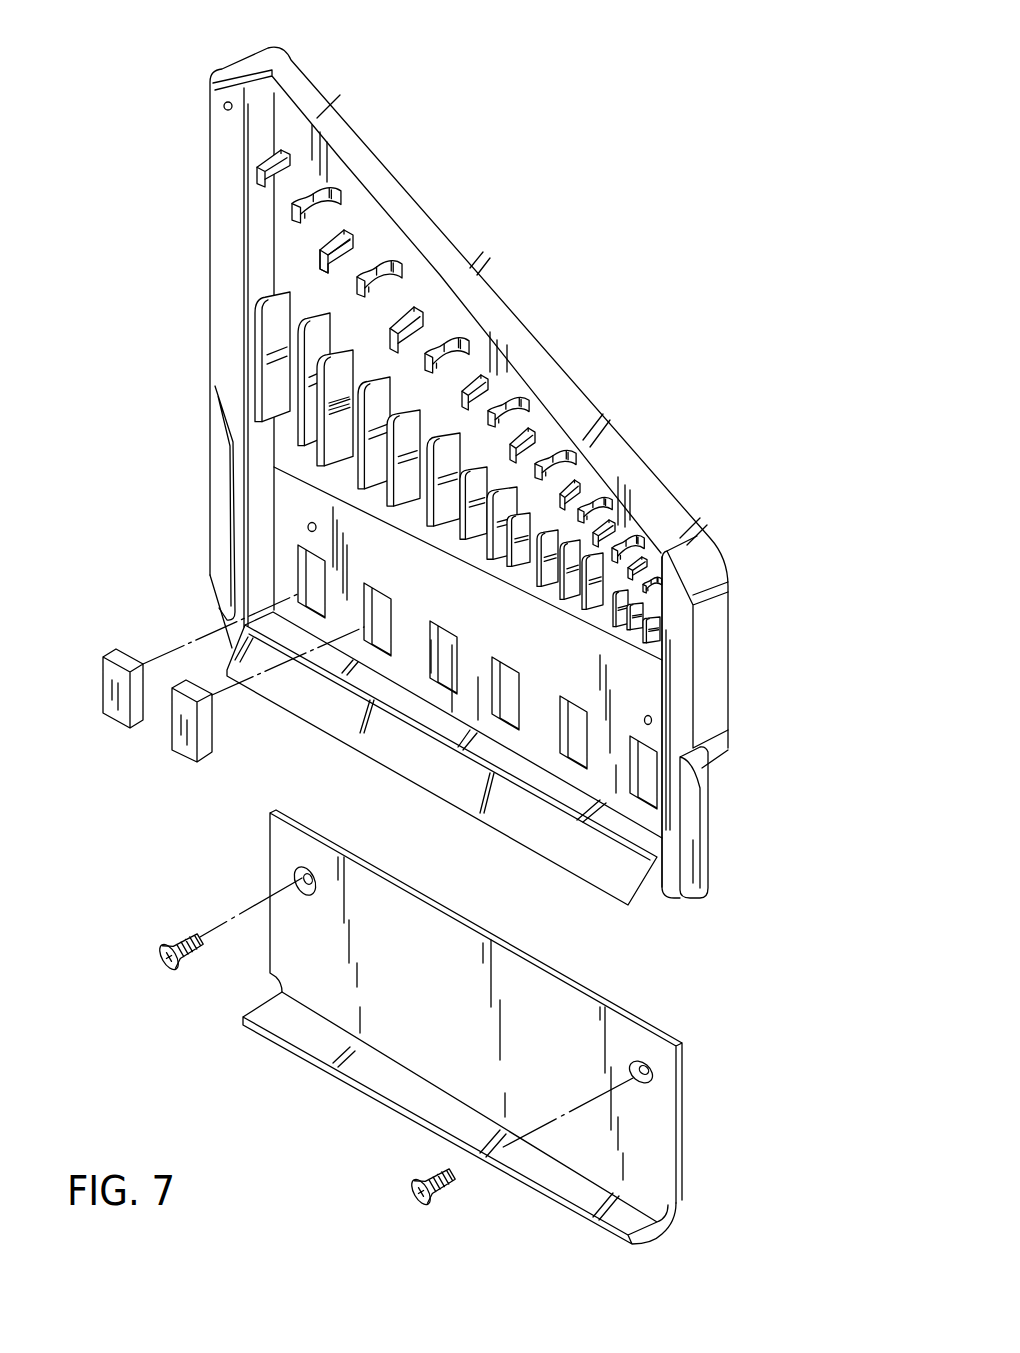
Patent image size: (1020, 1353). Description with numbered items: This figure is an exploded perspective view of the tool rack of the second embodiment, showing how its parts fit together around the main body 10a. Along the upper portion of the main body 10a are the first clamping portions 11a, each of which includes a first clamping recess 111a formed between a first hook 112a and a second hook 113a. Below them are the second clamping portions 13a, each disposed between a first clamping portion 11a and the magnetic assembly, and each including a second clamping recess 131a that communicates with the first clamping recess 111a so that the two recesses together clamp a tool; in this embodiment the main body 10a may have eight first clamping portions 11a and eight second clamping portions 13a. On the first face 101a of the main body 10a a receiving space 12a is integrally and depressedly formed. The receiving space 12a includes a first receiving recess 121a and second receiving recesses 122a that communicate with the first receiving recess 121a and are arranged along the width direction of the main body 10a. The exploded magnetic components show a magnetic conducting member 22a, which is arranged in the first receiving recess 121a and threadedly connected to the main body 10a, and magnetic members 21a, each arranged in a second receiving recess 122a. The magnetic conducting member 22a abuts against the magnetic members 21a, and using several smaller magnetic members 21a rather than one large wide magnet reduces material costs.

The main body 10a is at (534, 357).
The first clamping portion 11a is at (353, 232).
The first clamping recess 111a is at (353, 270).
The first hook 112a is at (330, 259).
The second hook 113a is at (367, 287).
The receiving space 12a is at (305, 517).
The first receiving recess 121a is at (640, 701).
The second receiving recess 122a is at (300, 566).
The second clamping portion 13a is at (315, 400).
The second clamping recess 131a is at (345, 428).
The first face 101a is at (647, 657).
The magnetic member 21a is at (112, 695).
The magnetic conducting member 22a is at (630, 1037).